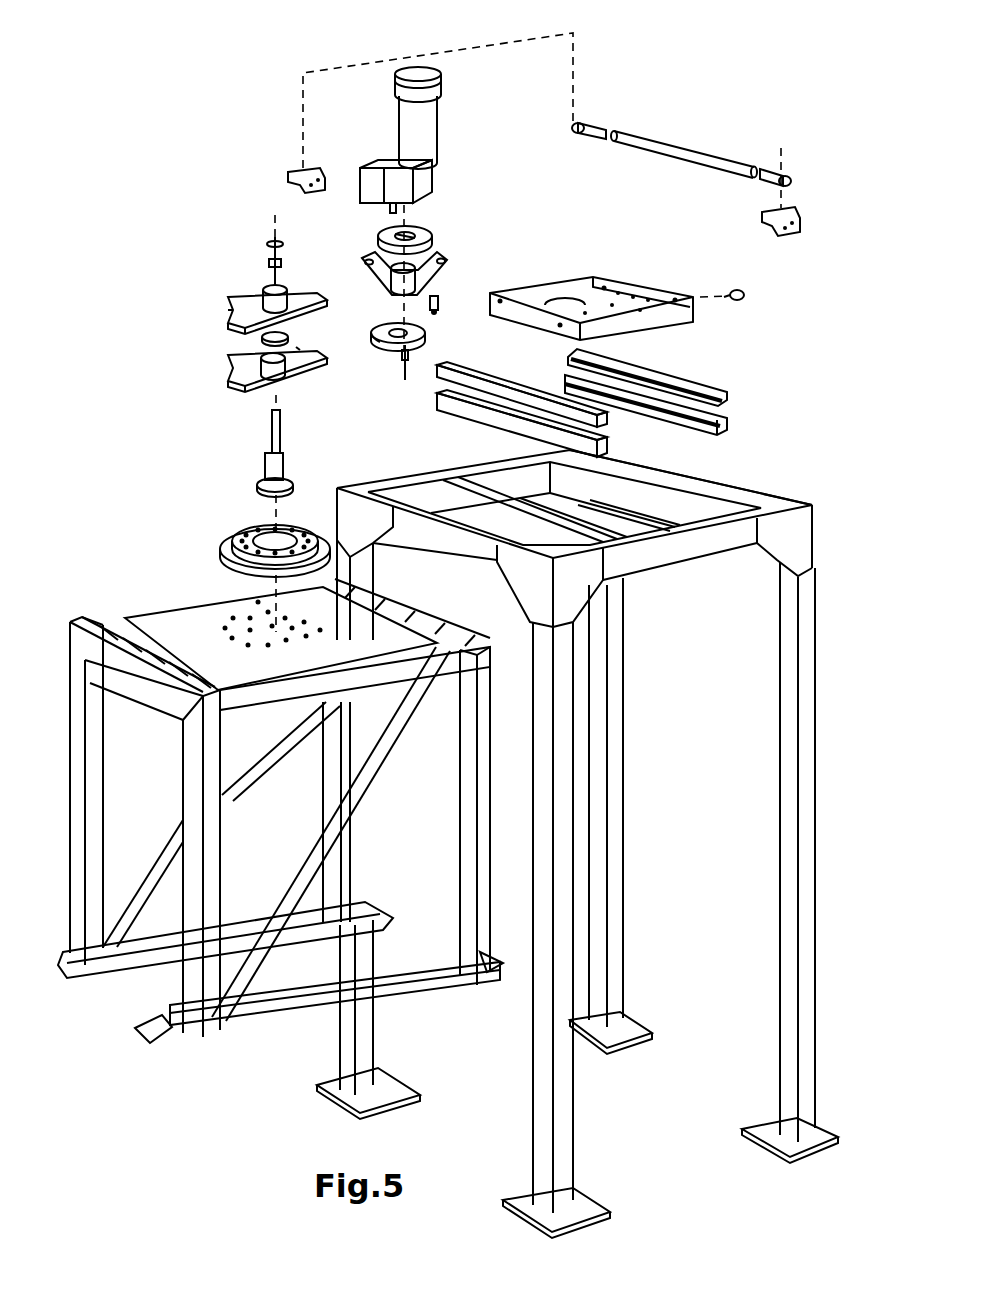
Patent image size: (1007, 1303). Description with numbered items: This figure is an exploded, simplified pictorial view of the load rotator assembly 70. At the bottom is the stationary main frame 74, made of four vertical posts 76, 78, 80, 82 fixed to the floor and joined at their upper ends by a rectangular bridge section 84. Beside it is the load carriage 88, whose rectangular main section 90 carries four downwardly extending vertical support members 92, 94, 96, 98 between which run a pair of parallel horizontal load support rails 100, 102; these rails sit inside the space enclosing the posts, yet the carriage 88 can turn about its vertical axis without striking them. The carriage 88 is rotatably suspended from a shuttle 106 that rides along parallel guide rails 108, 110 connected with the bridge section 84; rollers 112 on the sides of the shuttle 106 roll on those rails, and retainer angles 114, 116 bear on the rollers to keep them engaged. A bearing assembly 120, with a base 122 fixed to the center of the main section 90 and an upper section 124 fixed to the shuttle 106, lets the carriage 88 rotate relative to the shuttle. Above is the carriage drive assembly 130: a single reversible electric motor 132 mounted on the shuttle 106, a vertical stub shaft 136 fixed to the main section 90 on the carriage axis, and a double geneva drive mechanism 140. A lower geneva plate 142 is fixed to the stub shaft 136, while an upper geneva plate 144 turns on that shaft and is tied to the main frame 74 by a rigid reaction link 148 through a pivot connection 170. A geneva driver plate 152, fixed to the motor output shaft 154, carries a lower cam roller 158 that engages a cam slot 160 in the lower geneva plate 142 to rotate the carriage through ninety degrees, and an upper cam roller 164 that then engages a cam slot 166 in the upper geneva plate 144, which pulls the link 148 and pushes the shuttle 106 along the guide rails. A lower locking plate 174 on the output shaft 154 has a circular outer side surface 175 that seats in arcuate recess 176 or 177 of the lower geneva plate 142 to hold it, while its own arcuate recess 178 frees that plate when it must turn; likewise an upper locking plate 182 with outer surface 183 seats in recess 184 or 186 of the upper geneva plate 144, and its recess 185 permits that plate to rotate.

The load rotator assembly 70 is at (172, 118).
The main frame 74 is at (408, 478).
The post 76 is at (340, 1027).
The post 78 is at (560, 1082).
The post 80 is at (790, 952).
The post 82 is at (612, 877).
The bridge section 84 is at (717, 480).
The load carriage 88 is at (62, 607).
The main section 90 is at (294, 688).
The vertical support member 92 is at (75, 833).
The vertical support member 94 is at (196, 780).
The vertical support member 96 is at (467, 733).
The vertical support member 98 is at (323, 798).
The load support rail 100 is at (105, 973).
The load support rail 102 is at (148, 1032).
The shuttle 106 is at (655, 280).
The guide rail 108 is at (460, 410).
The guide rail 110 is at (727, 423).
The roller 112 is at (738, 293).
The retainer angle 114 is at (470, 377).
The retainer angle 116 is at (693, 380).
The bearing assembly 120 is at (228, 533).
The base 122 is at (247, 567).
The upper section 124 is at (300, 530).
The carriage drive assembly 130 is at (190, 176).
The electric motor 132 is at (410, 133).
The stub shaft 136 is at (268, 458).
The double geneva drive mechanism 140 is at (167, 340).
The lower geneva plate 142 is at (222, 392).
The upper geneva plate 144 is at (222, 322).
The reaction link 148 is at (720, 163).
The geneva driver plate 152 is at (378, 283).
The motor output shaft 154 is at (393, 207).
The lower cam roller 158 is at (441, 300).
The cam slot 160 is at (232, 367).
The upper cam roller 164 is at (388, 264).
The cam slot 166 is at (257, 296).
The connection 170 is at (590, 125).
The lower locking plate 174 is at (405, 362).
The circular outer side surface 175 is at (390, 344).
The arcuate recess 176 is at (228, 375).
The arcuate recess 177 is at (298, 347).
The arcuate recess 178 is at (410, 335).
The upper locking plate 182 is at (436, 228).
The circular outer side surface 183 is at (432, 238).
The arcuate recess 184 is at (223, 310).
The arcuate recess 185 is at (396, 233).
The arcuate recess 186 is at (298, 288).